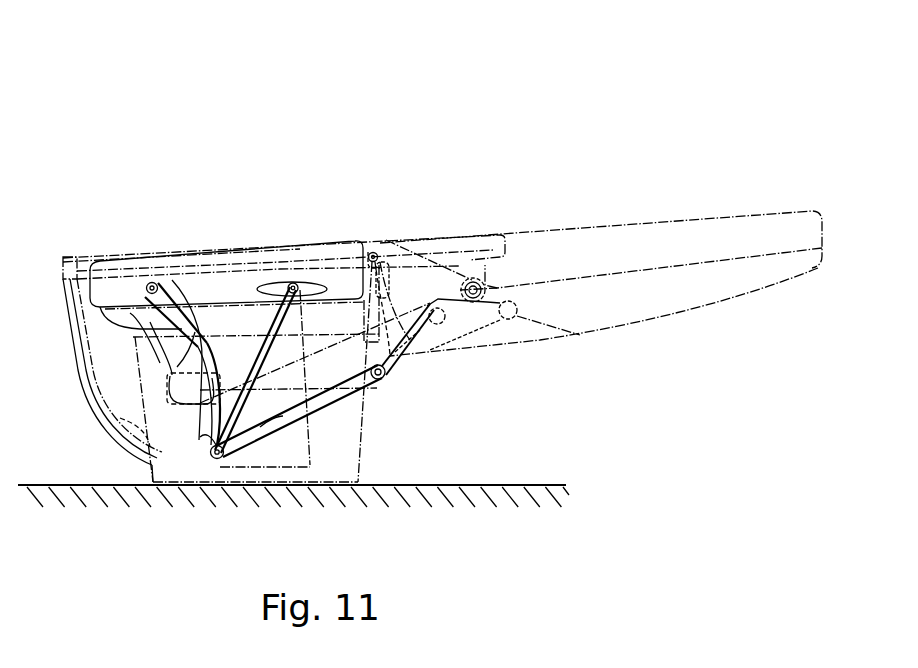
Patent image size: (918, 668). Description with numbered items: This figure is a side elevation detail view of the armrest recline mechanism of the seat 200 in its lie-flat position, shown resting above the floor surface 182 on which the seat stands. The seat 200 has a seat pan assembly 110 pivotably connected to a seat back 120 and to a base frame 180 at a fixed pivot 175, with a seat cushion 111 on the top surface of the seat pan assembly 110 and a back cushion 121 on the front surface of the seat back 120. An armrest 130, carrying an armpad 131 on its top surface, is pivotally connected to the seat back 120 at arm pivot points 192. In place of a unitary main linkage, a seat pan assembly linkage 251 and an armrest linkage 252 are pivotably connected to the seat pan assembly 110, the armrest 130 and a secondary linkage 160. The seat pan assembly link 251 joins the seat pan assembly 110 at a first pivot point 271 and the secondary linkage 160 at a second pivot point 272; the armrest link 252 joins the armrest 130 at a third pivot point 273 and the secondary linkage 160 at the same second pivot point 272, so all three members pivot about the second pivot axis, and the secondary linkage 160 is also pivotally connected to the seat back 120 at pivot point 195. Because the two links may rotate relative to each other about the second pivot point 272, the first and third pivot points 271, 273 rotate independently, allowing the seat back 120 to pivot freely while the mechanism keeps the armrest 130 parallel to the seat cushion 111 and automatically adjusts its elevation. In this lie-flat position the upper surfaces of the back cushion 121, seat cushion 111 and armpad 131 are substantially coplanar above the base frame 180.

The seat 200 is at (231, 92).
The seat pan assembly 110 is at (362, 311).
The seat cushion 111 is at (237, 280).
The seat back 120 is at (660, 322).
The back cushion 121 is at (702, 214).
The armrest 130 is at (75, 340).
The armpad 131 is at (73, 265).
The secondary linkage 160 is at (260, 427).
The fixed pivot 175 is at (377, 252).
The base frame 180 is at (371, 413).
The floor 182 is at (407, 485).
The arm pivot points 192 is at (478, 279).
The pivot point 195 is at (385, 378).
The seat pan assembly linkage 251 is at (293, 283).
The armrest linkage 252 is at (203, 320).
The first pivot point 271 is at (151, 282).
The second pivot point 272 is at (210, 460).
The third pivot point 273 is at (340, 240).